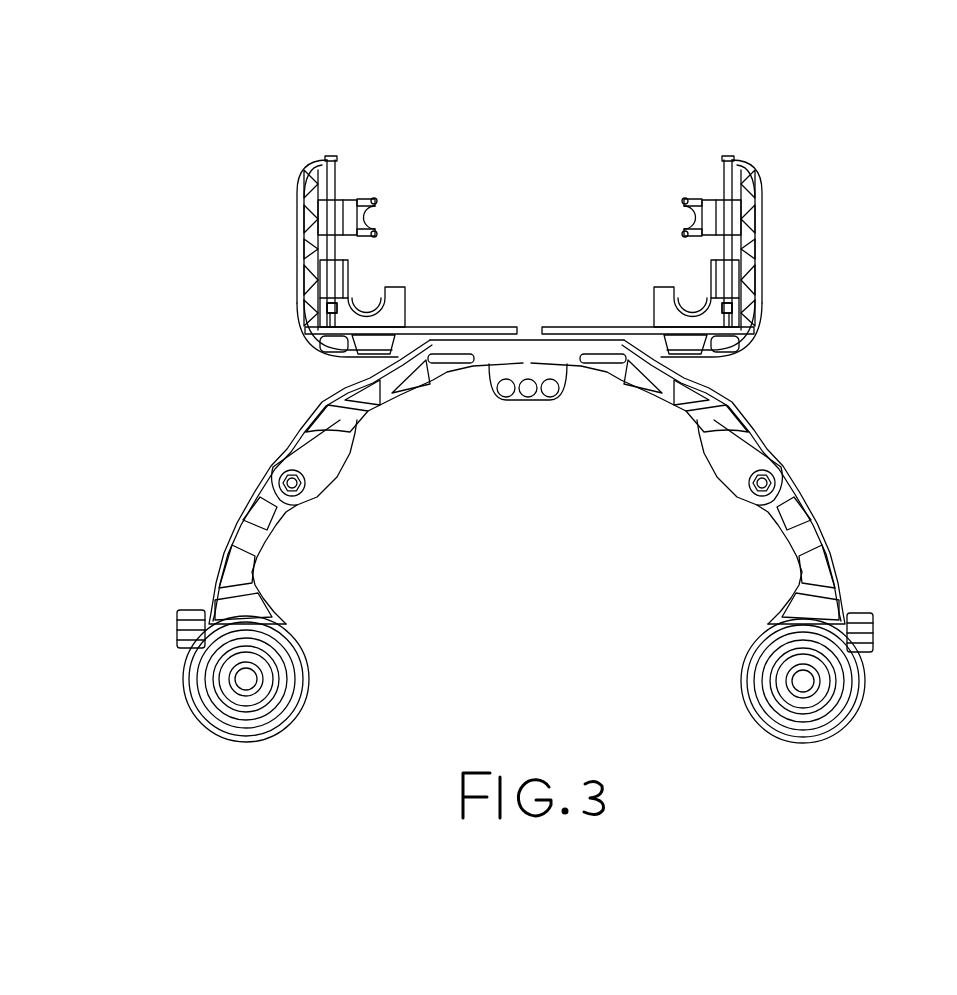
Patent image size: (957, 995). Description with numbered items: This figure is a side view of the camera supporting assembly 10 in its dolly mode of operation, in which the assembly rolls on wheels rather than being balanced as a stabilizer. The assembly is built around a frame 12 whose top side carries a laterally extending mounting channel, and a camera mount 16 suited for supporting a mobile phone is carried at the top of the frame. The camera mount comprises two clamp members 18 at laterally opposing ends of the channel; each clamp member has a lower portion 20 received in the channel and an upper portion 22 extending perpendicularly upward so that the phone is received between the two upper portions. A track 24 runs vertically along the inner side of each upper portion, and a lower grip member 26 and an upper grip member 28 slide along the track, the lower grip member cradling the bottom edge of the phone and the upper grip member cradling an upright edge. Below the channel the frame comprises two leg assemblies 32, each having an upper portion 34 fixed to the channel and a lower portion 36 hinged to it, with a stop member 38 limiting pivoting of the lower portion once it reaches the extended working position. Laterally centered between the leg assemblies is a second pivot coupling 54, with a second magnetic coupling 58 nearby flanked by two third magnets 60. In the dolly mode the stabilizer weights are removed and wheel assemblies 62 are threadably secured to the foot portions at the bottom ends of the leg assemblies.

The camera supporting assembly 10 is at (495, 400).
The frame 12 is at (527, 450).
The camera mount 16 is at (445, 227).
The clamp members 18 is at (523, 227).
The lower portion 20 is at (440, 327).
The upper portion 22 is at (297, 200).
The track 24 is at (333, 177).
The lower grip member 26 is at (393, 300).
The upper grip member 28 is at (352, 202).
The leg assemblies 32 is at (535, 482).
The upper portion 34 is at (348, 398).
The lower portion 36 is at (230, 550).
The stop member 38 is at (268, 469).
The second pivot coupling 54 is at (543, 462).
The second magnetic coupling 58 is at (530, 400).
The third magnets 60 is at (507, 400).
The wheel assemblies 62 is at (152, 676).